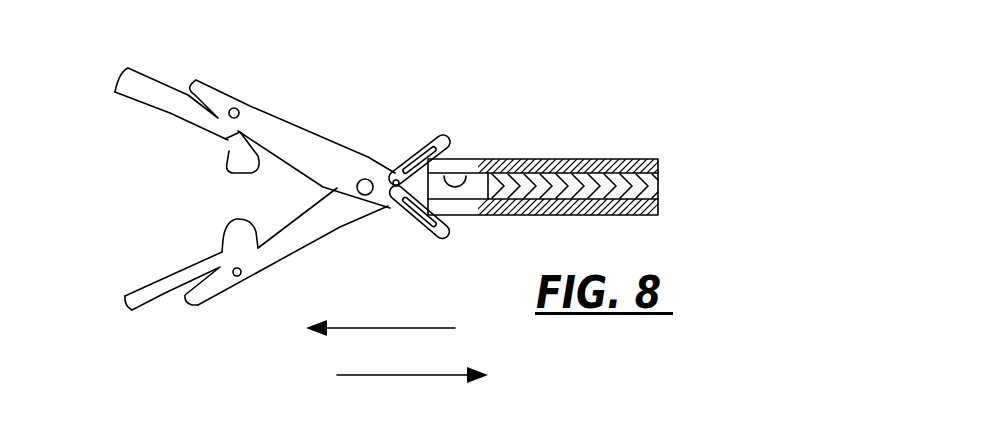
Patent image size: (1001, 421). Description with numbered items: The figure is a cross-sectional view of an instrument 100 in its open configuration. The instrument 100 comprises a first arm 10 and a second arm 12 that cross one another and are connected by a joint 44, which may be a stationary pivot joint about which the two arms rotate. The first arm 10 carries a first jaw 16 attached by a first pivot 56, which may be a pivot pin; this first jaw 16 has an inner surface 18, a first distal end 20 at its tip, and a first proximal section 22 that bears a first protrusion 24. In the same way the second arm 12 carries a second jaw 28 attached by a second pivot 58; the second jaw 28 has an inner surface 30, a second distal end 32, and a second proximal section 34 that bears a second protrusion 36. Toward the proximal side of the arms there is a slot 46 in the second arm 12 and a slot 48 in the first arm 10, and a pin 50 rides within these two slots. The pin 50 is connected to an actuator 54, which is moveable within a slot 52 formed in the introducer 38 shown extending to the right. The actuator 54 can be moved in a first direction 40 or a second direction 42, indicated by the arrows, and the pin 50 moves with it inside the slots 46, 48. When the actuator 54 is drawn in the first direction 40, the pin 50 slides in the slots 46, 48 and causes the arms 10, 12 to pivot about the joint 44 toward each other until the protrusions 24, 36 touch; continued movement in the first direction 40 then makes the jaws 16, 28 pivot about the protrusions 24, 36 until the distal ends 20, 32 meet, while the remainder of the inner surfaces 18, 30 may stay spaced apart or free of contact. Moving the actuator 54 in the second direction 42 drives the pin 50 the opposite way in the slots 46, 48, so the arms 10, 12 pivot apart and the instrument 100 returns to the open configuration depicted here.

The instrument 100 is at (512, 84).
The first arm 10 is at (312, 126).
The second arm 12 is at (300, 255).
The first jaw 16 is at (135, 121).
The inner surface 18 is at (142, 104).
The first distal end 20 is at (115, 90).
The first proximal section 22 is at (212, 135).
The first protrusion 24 is at (254, 173).
The second jaw 28 is at (145, 262).
The inner surface 30 is at (158, 278).
The second distal end 32 is at (124, 298).
The second proximal section 34 is at (207, 257).
The second protrusion 36 is at (245, 221).
The introducer 38 is at (608, 152).
The first direction 40 is at (398, 331).
The second direction 42 is at (396, 376).
The joint 44 is at (365, 178).
The slot 46 is at (433, 136).
The slot 48 is at (433, 243).
The pin 50 is at (397, 172).
The slot 52 is at (467, 177).
The actuator 54 is at (590, 186).
The first pivot 56 is at (237, 108).
The second pivot 58 is at (237, 277).